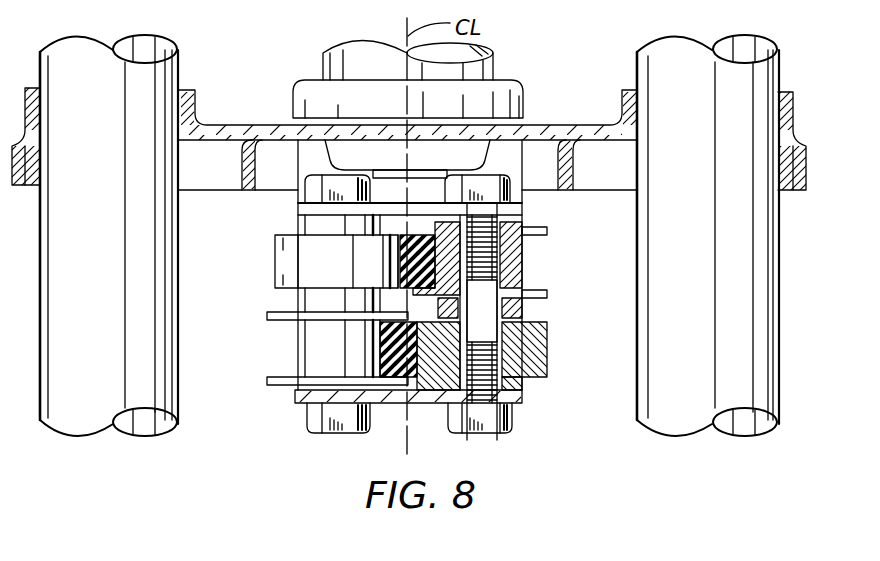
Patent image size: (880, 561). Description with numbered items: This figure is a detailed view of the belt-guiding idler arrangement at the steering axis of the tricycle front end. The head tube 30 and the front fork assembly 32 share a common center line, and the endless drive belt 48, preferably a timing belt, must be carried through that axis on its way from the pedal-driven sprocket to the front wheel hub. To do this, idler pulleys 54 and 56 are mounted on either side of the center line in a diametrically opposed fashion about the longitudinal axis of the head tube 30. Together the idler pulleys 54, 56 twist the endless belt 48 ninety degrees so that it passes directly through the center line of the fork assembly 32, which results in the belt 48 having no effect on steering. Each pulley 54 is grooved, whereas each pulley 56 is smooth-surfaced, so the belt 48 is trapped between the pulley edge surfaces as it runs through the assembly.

The head tube 30 is at (322, 71).
The front fork assembly 32 is at (573, 74).
The endless drive belt 48 is at (408, 343).
The idler pulley 54 is at (298, 340).
The idler pulley 56 is at (280, 262).